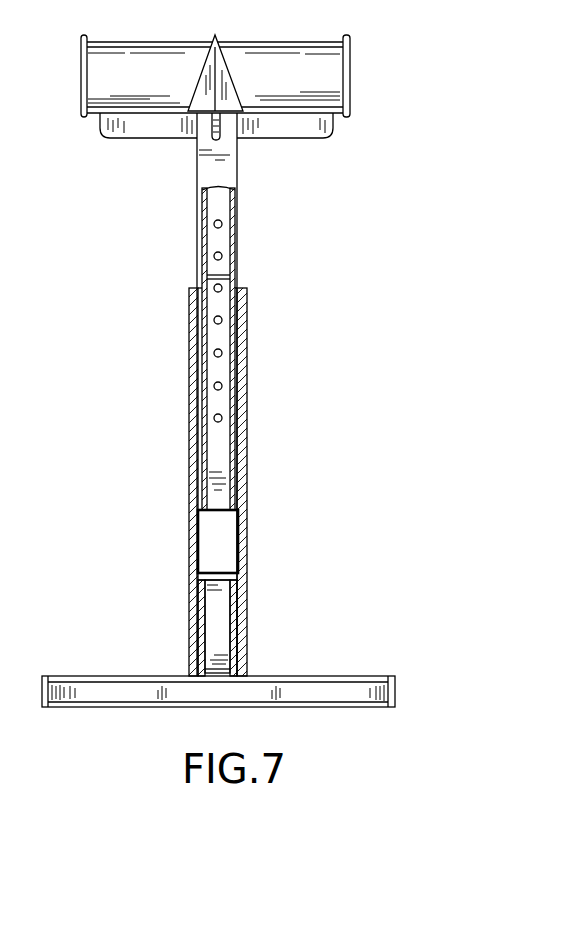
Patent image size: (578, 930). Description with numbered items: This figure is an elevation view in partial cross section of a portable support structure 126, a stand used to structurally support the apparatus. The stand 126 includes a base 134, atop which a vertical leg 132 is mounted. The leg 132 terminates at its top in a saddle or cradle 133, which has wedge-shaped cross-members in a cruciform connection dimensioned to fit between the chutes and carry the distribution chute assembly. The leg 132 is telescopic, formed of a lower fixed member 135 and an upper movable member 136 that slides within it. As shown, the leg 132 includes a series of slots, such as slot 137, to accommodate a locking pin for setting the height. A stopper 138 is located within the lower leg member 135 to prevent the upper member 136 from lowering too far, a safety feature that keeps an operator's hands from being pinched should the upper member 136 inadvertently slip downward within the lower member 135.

The portable support structure 126 is at (134, 291).
The cradle 133 is at (351, 73).
The upper movable member 136 is at (235, 230).
The adjustment hole 137 is at (222, 257).
The vertical leg 132 is at (190, 467).
The lower fixed member 135 is at (247, 637).
The stopper 138 is at (215, 618).
The base 134 is at (370, 676).